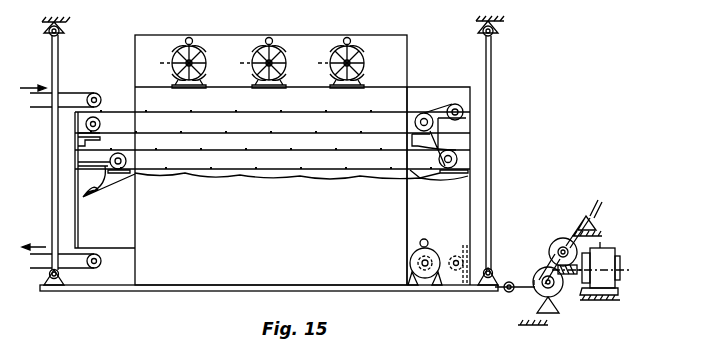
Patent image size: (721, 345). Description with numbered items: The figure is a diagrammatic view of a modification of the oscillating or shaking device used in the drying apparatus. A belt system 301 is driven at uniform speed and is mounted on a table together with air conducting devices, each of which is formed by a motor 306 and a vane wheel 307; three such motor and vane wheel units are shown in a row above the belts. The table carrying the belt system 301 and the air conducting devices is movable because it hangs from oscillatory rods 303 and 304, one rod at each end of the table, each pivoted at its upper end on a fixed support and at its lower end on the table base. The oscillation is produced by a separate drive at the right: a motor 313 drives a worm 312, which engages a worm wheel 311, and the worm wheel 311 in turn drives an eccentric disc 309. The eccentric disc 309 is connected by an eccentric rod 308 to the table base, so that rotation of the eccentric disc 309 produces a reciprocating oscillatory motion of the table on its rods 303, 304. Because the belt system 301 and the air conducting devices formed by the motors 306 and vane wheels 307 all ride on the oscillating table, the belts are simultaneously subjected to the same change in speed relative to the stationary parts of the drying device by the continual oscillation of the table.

The belt system 301 is at (432, 83).
The oscillatory rod 303 is at (77, 176).
The oscillatory rod 304 is at (489, 145).
The motor 306 is at (204, 65).
The vane wheel 307 is at (199, 53).
The eccentric rod 308 is at (522, 291).
The eccentric disc 309 is at (545, 272).
The worm wheel 311 is at (558, 244).
The worm 312 is at (568, 276).
The motor 313 is at (613, 255).